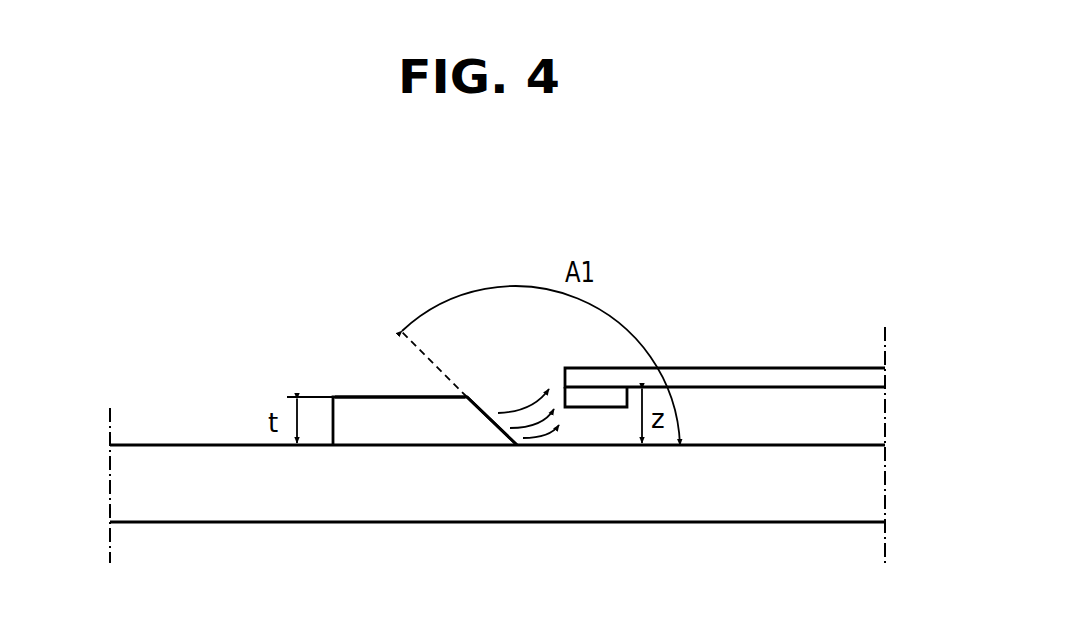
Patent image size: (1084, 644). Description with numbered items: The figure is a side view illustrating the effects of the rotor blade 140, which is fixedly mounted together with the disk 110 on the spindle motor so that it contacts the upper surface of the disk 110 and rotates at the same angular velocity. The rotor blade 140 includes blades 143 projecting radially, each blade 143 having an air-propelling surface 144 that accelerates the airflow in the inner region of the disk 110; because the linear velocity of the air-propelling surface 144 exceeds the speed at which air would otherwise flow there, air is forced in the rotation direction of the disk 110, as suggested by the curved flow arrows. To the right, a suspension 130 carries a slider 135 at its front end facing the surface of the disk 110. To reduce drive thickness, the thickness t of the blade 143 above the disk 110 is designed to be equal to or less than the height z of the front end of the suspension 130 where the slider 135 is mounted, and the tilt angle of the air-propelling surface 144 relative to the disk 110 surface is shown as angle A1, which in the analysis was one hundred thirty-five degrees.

The disk 110 is at (770, 508).
The suspension 130 is at (723, 377).
The slider 135 is at (593, 403).
The rotor blade 140 is at (312, 374).
The blade 143 is at (367, 395).
The air-propelling surface 144 is at (482, 407).